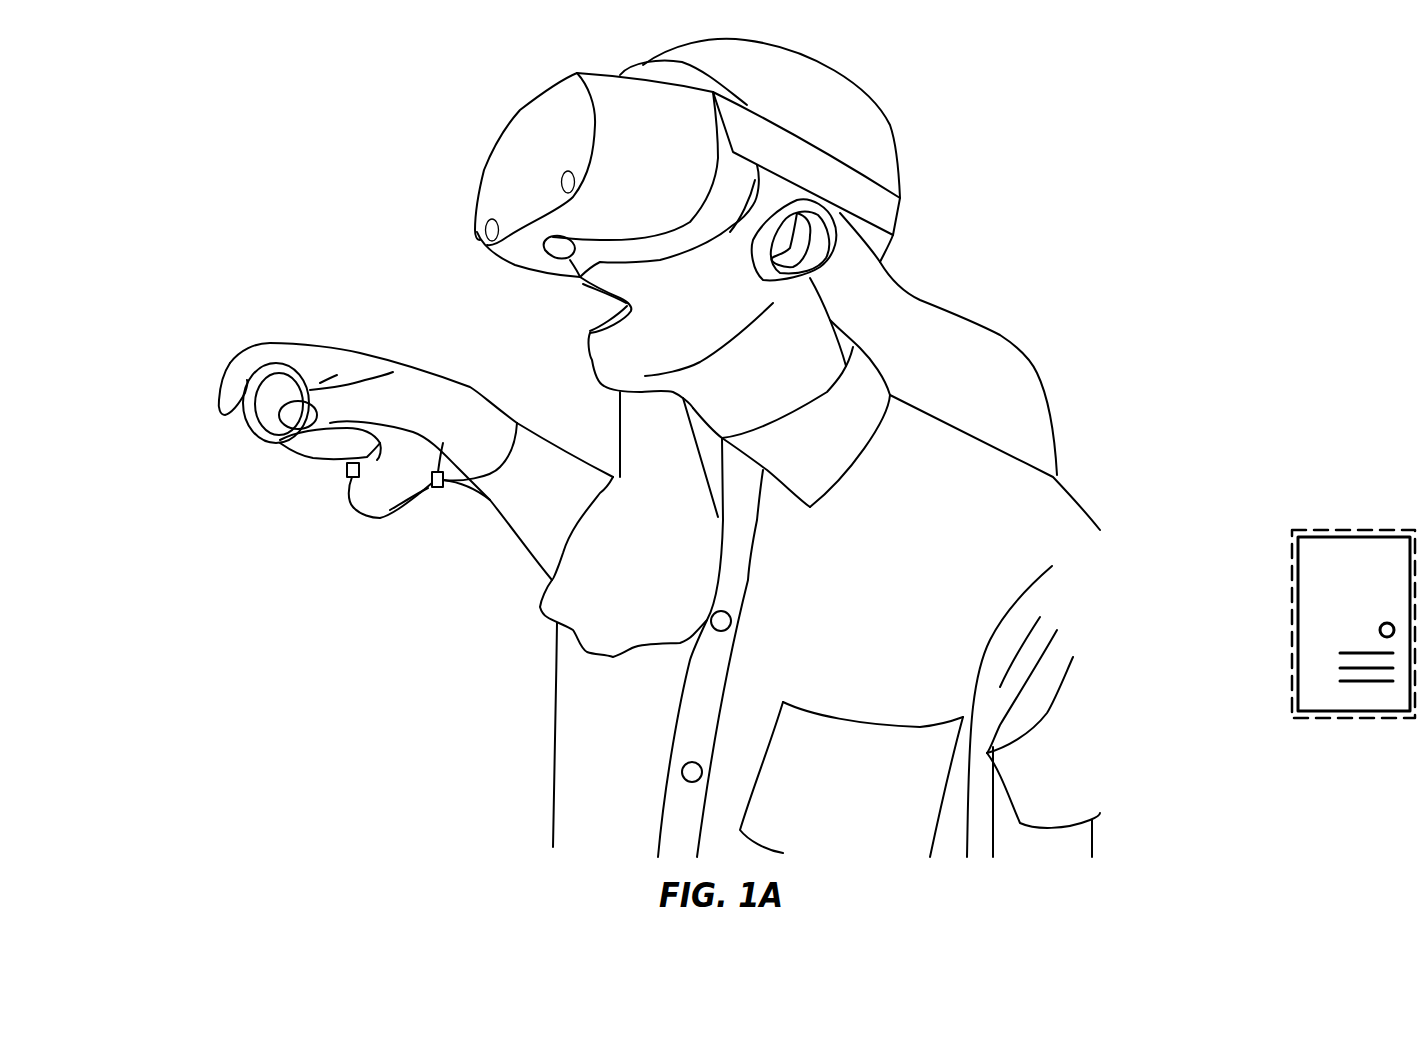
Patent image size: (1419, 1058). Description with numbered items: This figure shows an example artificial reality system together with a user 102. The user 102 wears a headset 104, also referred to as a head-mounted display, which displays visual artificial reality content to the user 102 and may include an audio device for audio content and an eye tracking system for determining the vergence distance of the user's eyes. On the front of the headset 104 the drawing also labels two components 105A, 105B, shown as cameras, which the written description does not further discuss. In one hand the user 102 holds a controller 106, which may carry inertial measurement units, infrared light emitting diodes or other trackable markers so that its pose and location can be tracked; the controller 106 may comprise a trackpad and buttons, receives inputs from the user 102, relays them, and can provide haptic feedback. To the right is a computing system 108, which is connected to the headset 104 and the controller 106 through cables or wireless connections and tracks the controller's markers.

The user 102 is at (998, 302).
The headset 104 is at (538, 93).
The camera 105A is at (489, 236).
The camera 105B is at (560, 184).
The controller 106 is at (267, 438).
The computing system 108 is at (1345, 530).